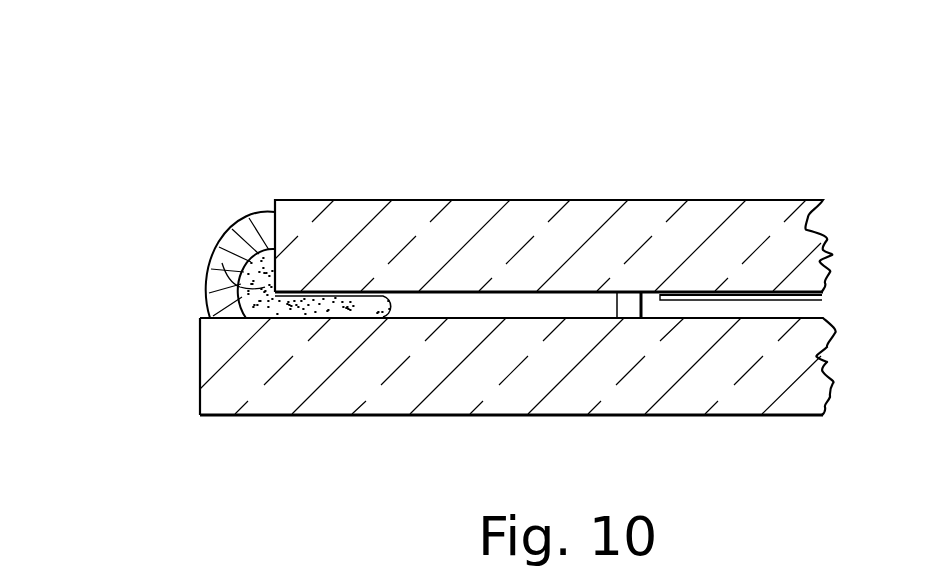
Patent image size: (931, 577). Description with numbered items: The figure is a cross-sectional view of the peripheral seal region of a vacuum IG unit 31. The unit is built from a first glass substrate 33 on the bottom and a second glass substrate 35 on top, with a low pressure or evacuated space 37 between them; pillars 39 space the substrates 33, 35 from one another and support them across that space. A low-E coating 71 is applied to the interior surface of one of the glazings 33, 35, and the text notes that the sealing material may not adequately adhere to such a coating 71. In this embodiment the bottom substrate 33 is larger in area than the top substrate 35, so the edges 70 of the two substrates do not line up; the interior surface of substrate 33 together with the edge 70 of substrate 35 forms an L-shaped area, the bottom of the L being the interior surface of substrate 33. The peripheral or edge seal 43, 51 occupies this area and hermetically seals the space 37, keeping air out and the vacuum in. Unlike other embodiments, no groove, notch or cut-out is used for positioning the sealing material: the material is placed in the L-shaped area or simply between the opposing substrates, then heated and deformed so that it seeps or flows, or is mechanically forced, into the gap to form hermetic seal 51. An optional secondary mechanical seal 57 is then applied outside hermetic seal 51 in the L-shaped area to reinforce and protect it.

The vacuum IG unit 31 is at (720, 130).
The second glass substrate 35 is at (498, 234).
The first glass substrate 33 is at (315, 402).
The edge 70 is at (200, 388).
The pillar 39 is at (617, 313).
The low-E coating 71 is at (718, 300).
The low pressure space 37 is at (755, 312).
The hermetic edge seal 51 is at (213, 260).
The mechanical seal 57 is at (240, 218).
The peripheral or edge seal 43 is at (173, 280).